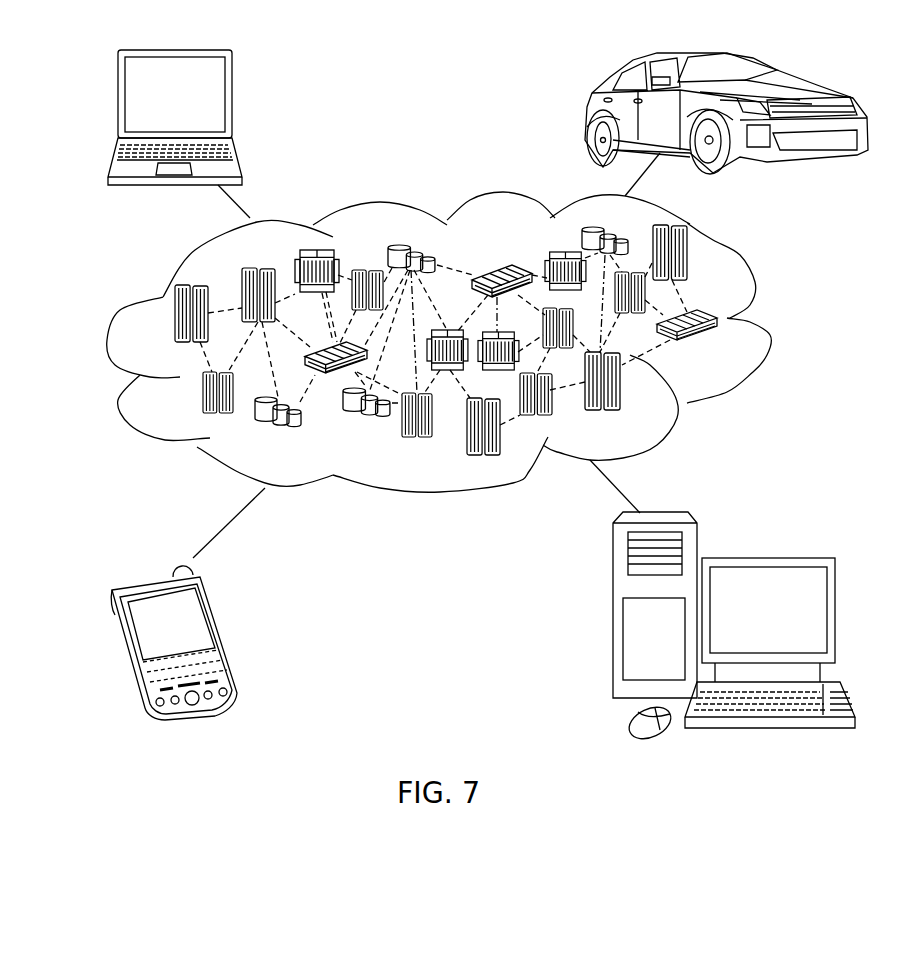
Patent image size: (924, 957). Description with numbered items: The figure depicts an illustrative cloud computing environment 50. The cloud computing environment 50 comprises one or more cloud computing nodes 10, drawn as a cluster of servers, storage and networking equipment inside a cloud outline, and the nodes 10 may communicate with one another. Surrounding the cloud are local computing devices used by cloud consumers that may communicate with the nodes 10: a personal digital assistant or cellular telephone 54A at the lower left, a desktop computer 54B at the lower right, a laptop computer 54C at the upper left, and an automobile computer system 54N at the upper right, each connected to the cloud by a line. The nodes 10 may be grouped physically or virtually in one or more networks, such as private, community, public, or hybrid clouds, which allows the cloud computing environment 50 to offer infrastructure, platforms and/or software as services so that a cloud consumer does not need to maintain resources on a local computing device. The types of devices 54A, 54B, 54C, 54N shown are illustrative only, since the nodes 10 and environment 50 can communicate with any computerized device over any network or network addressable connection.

The cloud computing node 10 is at (717, 355).
The cloud computing environment 50 is at (768, 320).
The personal digital assistant or cellular telephone 54A is at (223, 635).
The desktop computer 54B is at (767, 557).
The laptop computer 54C is at (232, 102).
The automobile computer system 54N is at (587, 113).